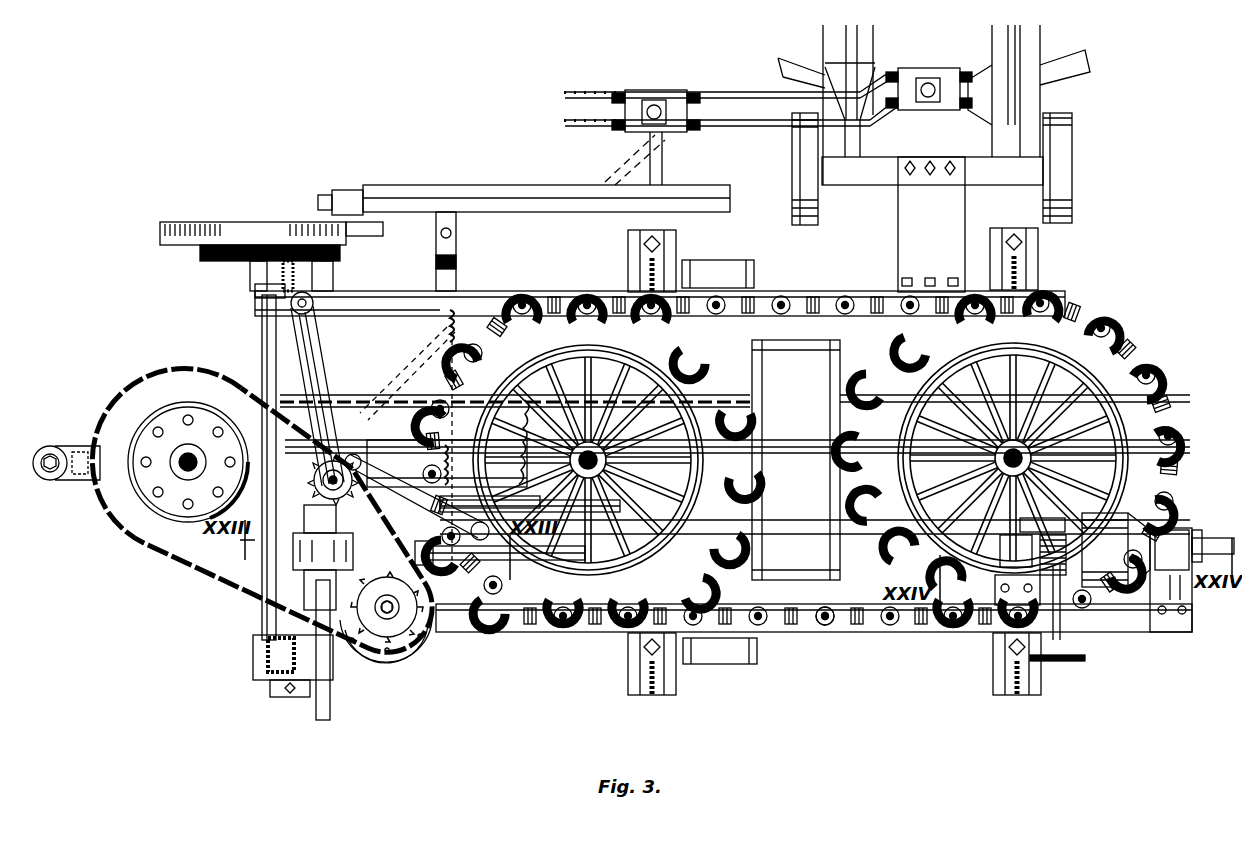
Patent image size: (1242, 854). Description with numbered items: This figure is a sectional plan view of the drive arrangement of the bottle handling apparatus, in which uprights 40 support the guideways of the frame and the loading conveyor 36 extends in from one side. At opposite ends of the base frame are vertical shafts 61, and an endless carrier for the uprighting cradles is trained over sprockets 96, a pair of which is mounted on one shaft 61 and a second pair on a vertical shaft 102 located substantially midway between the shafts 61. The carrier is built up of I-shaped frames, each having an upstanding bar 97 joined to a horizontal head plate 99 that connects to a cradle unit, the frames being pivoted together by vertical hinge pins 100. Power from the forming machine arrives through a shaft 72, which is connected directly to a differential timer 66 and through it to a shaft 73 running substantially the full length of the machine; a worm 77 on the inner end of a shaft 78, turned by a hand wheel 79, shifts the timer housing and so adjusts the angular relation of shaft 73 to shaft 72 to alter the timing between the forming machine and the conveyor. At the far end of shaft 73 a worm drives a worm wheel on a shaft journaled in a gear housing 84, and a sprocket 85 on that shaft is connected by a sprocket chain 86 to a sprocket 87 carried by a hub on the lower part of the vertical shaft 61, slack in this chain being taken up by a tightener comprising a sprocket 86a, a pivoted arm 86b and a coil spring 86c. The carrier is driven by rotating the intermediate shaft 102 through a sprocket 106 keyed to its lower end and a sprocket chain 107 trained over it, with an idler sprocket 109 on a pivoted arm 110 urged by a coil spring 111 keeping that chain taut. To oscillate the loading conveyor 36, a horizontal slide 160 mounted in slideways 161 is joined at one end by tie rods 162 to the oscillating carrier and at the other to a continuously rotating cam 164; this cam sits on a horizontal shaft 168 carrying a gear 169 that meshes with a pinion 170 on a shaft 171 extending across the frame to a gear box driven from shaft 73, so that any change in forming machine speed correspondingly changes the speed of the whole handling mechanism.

The loading conveyor 36 is at (1052, 35).
The uprights 40 is at (630, 266).
The vertical shafts 61 is at (1022, 476).
The differential timer 66 is at (1142, 592).
The shaft 72 is at (1214, 538).
The shaft 73 is at (540, 558).
The worm 77 is at (1065, 547).
The shaft 78 is at (1054, 605).
The hand wheel 79 is at (1066, 666).
The gear housing 84 is at (415, 655).
The sprocket 85 is at (380, 655).
The sprocket chain 86 is at (200, 570).
The sprocket 86a is at (308, 476).
The pivoted arm 86b is at (316, 360).
The coil spring 86c is at (413, 361).
The sprocket 87 is at (125, 530).
The sprockets 96 is at (924, 397).
The upstanding bar 97 is at (838, 630).
The head plate 99 is at (885, 628).
The hinge pins 100 is at (826, 628).
The vertical shaft 102 is at (575, 470).
The sprocket 106 is at (570, 465).
The sprocket chain 107 is at (510, 500).
The idler sprocket 109 is at (490, 560).
The pivoted arm 110 is at (400, 484).
The coil spring 111 is at (458, 470).
The horizontal slide 160 is at (348, 190).
The slideways 161 is at (540, 195).
The tie rods 162 is at (737, 122).
The cam 164 is at (270, 225).
The horizontal shaft 168 is at (261, 332).
The gear 169 is at (232, 260).
The pinion 170 is at (338, 250).
The shaft 171 is at (328, 310).